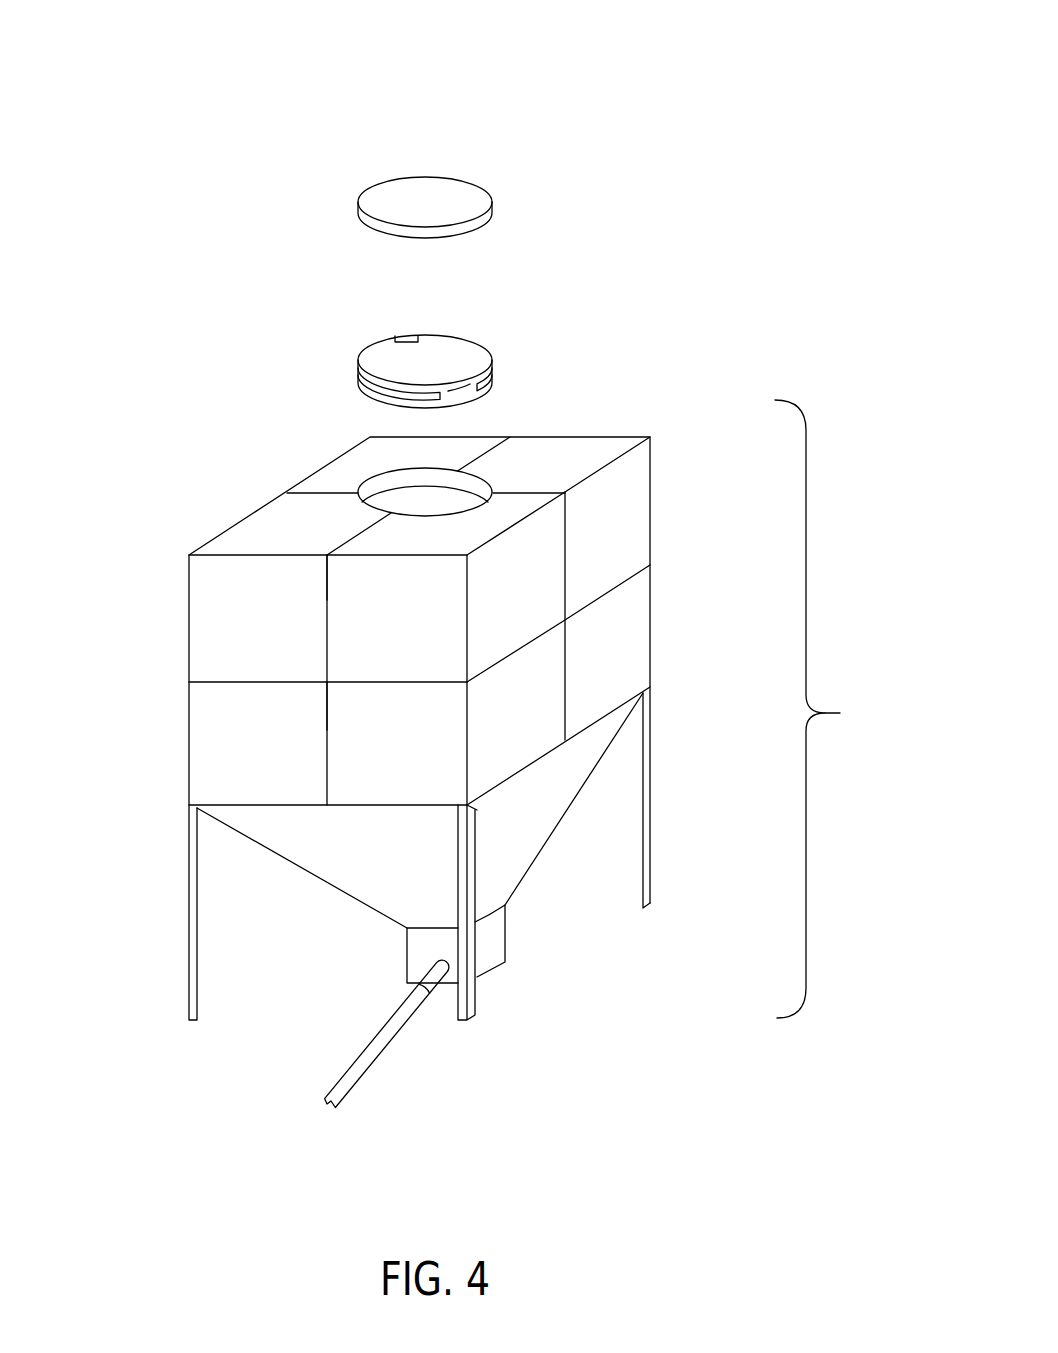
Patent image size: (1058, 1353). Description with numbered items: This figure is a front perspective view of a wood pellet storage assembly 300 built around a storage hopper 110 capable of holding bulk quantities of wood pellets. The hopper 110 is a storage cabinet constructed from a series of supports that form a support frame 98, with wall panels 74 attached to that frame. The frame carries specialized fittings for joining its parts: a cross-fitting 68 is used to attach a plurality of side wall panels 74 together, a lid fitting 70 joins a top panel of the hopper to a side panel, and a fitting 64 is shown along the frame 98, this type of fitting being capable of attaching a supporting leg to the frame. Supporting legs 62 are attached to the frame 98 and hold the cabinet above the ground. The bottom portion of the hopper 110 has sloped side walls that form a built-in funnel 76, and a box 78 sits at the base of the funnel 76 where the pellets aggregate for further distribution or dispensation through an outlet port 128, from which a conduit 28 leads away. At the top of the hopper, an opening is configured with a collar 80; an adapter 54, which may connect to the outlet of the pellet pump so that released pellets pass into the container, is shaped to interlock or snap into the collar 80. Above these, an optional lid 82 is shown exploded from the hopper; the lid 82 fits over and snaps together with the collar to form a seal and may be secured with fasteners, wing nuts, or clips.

The material handling assembly 300 is at (735, 93).
The lid 82 is at (462, 188).
The adapter 54 is at (485, 385).
The collar 80 is at (377, 483).
The lid fitting 70 is at (333, 562).
The cross-fitting 68 is at (334, 687).
The wall panels 74 is at (627, 658).
The fitting 64 is at (600, 720).
The support frame 98 is at (187, 759).
The storage hopper 110 is at (833, 709).
The supporting legs 62 is at (650, 808).
The funnel 76 is at (552, 800).
The box 78 is at (492, 952).
The outlet port 128 is at (428, 985).
The conduit 28 is at (372, 1058).